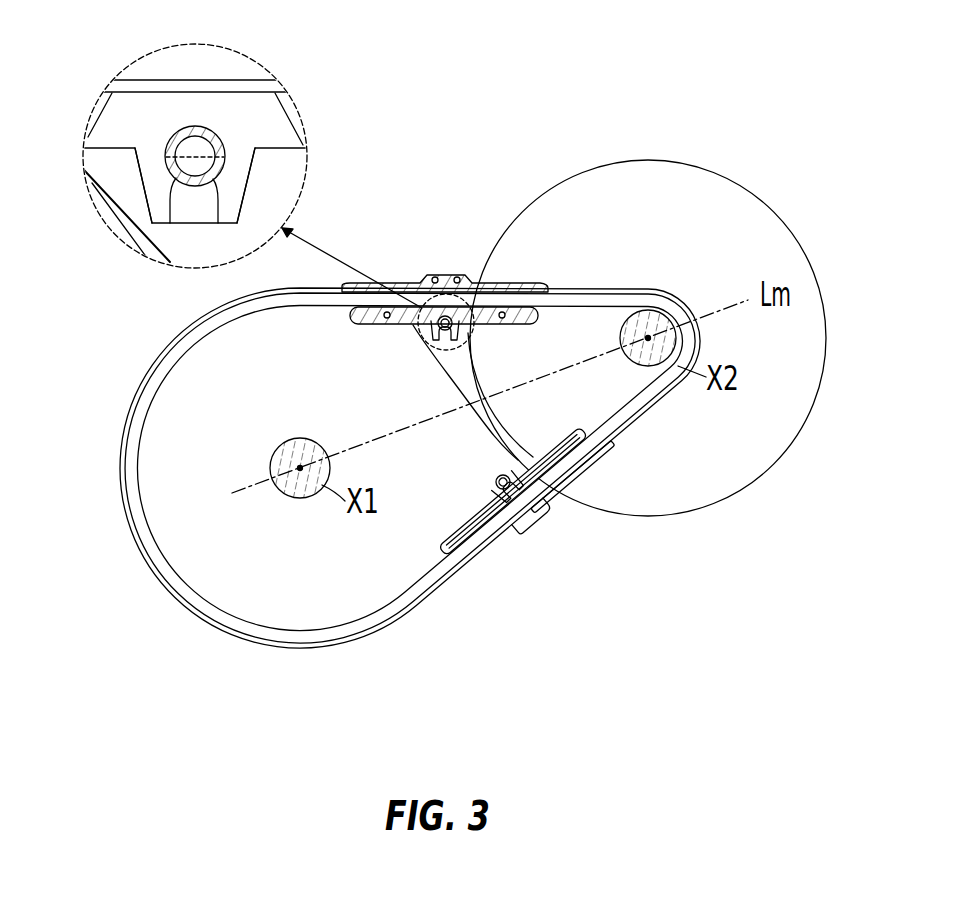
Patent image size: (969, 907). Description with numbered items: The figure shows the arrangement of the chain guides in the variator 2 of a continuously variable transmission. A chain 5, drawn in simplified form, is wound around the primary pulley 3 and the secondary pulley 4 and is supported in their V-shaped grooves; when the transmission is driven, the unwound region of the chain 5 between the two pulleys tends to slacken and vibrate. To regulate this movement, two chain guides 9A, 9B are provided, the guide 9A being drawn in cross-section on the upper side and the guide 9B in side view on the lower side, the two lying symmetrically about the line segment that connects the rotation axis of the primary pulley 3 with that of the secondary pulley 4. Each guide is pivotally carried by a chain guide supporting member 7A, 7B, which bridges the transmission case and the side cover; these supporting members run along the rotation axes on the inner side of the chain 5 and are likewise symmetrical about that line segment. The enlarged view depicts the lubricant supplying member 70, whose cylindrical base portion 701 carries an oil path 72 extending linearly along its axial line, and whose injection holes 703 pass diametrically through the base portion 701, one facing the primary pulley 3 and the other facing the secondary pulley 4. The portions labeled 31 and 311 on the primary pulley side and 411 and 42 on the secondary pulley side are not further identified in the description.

The variator 2 is at (445, 465).
The primary pulley 3 is at (382, 506).
The frame body 31 is at (120, 461).
The first rotation shaft 311 is at (272, 462).
The secondary pulley 4 is at (648, 442).
The second rotation shaft 411 is at (616, 337).
The driven wheel 42 is at (690, 513).
The chain 5 is at (436, 595).
The chain guide supporting member 7A is at (440, 345).
The chain guide supporting member 7B is at (482, 467).
The chain guide 9A is at (526, 272).
The chain guide 9B is at (600, 466).
The lubricant supplying member 70 is at (196, 119).
The cylindrical base portion 701 is at (191, 188).
The injection hole 703 is at (165, 157).
The oil path 72 is at (195, 156).